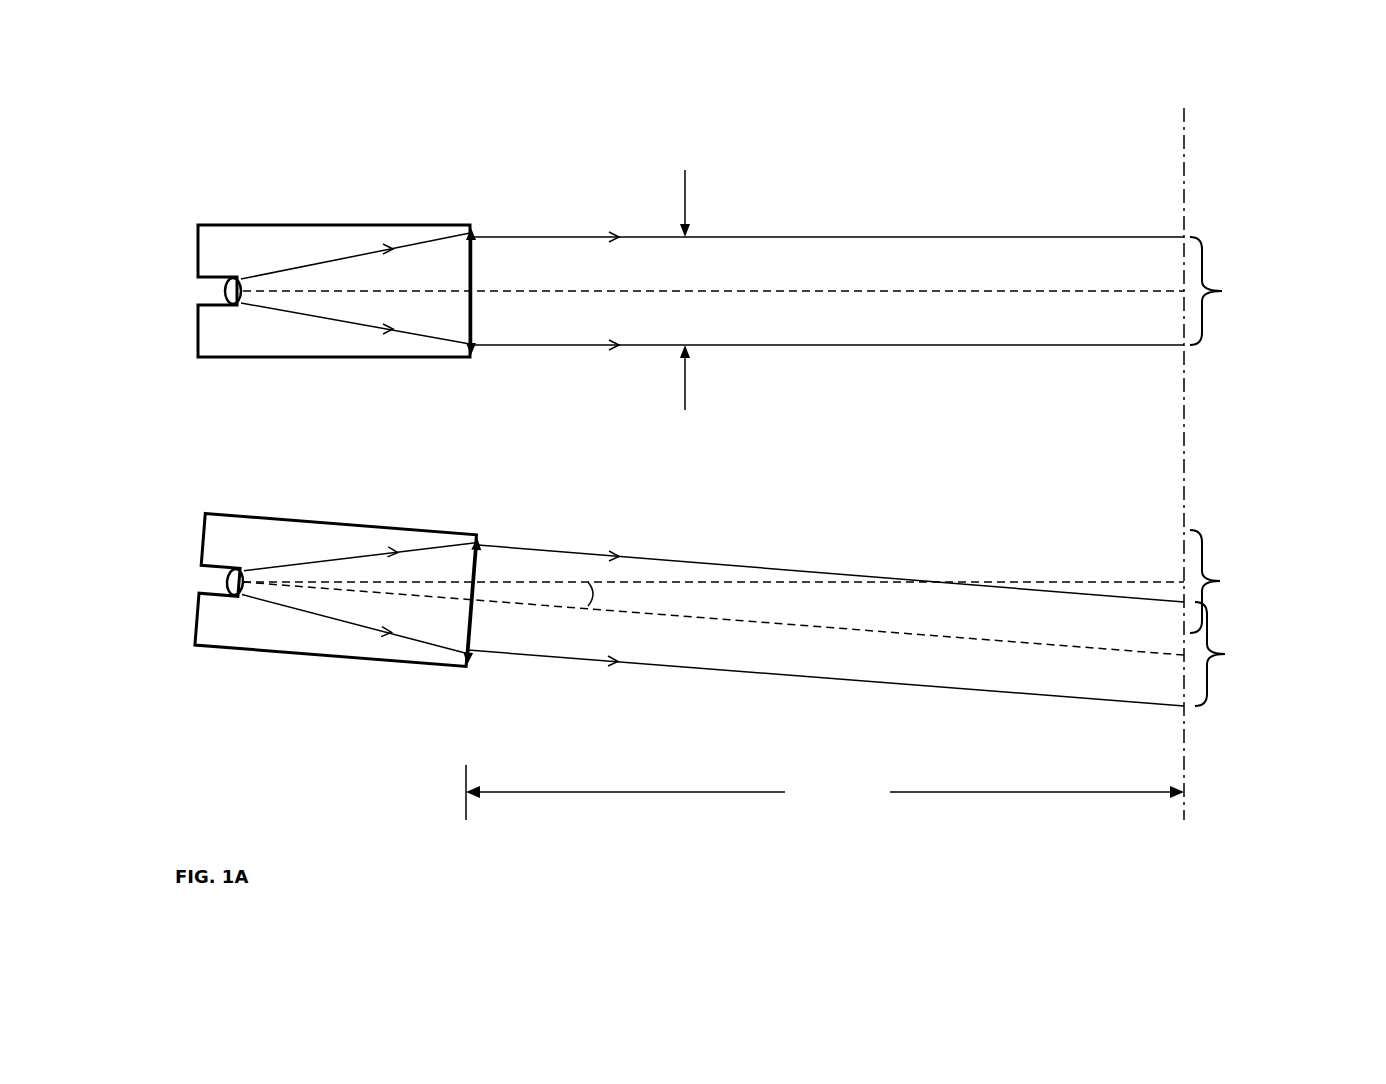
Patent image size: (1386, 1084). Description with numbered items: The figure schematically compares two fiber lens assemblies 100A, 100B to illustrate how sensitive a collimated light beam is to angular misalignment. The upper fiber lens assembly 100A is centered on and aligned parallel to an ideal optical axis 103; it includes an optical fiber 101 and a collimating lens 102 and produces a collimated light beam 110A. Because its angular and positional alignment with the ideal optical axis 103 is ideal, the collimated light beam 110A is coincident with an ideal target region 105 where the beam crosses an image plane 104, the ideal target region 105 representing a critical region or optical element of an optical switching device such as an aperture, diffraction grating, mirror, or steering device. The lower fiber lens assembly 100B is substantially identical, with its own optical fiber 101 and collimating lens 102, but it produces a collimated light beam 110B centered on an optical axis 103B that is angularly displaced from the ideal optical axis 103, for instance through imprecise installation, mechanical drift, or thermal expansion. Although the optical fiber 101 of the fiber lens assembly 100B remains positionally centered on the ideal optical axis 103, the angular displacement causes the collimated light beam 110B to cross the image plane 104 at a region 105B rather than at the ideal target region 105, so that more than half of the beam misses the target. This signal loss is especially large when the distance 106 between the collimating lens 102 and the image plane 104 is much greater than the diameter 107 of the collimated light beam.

The fiber lens assembly 100A is at (315, 225).
The fiber lens assembly 100B is at (365, 660).
The optical fiber 101 is at (178, 291).
The collimating lens 102 is at (472, 331).
The ideal optical axis 103 is at (870, 290).
The optical axis 103B is at (868, 630).
The image plane 104 is at (1184, 187).
The ideal target region 105 is at (1238, 291).
The region 105B is at (1227, 654).
The distance 106 is at (825, 792).
The diameter 107 is at (687, 200).
The collimated light beam 110A is at (733, 237).
The collimated light beam 110B is at (640, 556).